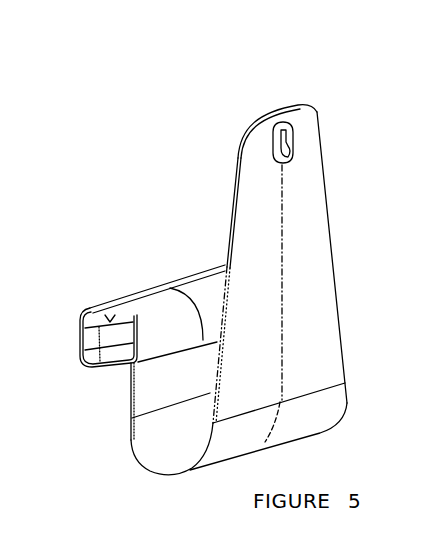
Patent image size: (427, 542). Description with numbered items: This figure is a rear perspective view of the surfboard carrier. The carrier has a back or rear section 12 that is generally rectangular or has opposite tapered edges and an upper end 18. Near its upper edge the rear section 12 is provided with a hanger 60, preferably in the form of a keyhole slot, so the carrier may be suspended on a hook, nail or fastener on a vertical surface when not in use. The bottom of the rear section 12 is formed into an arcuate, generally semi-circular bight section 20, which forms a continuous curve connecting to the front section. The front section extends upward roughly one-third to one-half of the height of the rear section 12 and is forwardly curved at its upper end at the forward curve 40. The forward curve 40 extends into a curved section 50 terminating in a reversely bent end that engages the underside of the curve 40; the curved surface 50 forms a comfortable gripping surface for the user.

The rear section 12 is at (318, 263).
The upper end 18 is at (275, 104).
The hanger 60 is at (290, 162).
The forward curve 40 is at (92, 307).
The curved section 50 is at (102, 372).
The bight section 20 is at (128, 438).